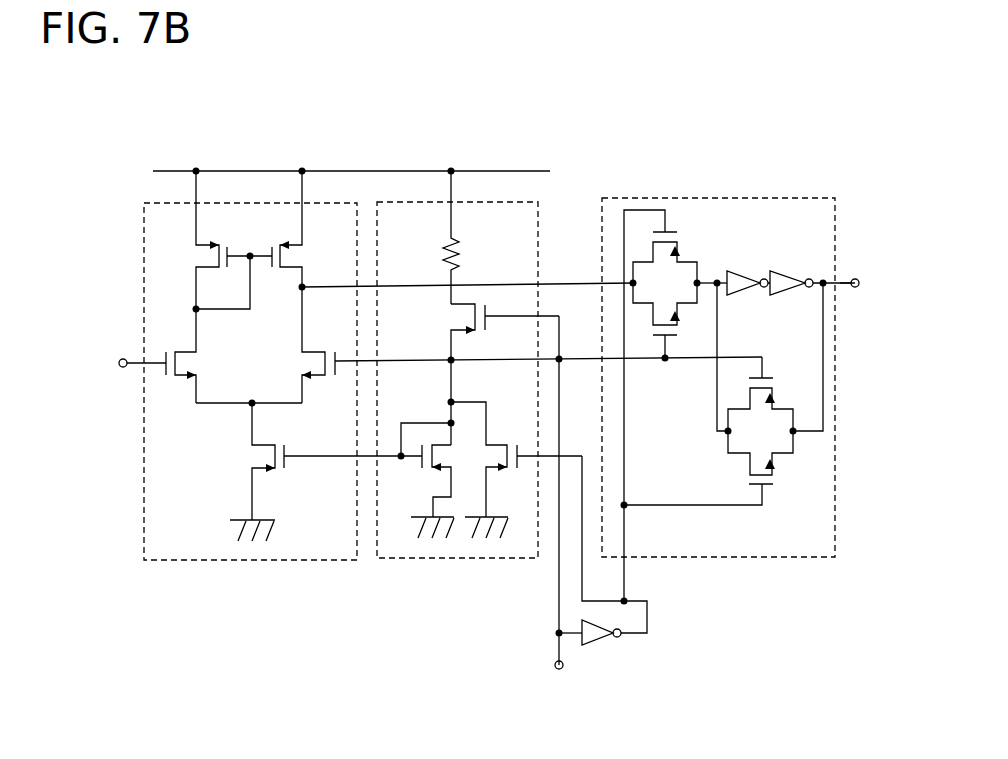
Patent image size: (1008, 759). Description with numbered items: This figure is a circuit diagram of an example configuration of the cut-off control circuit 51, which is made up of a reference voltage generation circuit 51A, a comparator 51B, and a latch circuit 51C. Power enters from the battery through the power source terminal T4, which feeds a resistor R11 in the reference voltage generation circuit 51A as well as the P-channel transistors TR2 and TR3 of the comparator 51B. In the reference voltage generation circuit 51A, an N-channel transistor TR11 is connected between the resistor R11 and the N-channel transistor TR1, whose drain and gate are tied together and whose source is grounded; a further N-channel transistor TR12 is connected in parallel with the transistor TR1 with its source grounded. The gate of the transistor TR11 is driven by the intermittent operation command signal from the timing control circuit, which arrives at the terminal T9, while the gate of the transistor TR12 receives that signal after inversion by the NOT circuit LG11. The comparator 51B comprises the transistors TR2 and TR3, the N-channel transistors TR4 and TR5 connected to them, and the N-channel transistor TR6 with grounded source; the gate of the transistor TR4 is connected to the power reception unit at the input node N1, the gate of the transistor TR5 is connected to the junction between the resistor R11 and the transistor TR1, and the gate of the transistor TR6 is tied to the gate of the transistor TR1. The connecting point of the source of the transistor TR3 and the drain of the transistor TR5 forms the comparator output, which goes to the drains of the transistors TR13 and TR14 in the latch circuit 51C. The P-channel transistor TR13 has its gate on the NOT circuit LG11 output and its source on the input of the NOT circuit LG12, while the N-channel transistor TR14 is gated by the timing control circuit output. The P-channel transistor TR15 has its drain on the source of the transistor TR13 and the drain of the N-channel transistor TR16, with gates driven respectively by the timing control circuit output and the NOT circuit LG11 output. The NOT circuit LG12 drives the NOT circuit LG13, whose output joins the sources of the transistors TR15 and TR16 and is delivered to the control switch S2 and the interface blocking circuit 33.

The cut-off control circuit 51 is at (190, 132).
The reference voltage generation circuit 51A is at (436, 198).
The comparator 51B is at (264, 200).
The latch circuit 51C is at (735, 198).
The transistor TR1 is at (425, 491).
The transistor TR2 is at (211, 240).
The transistor TR3 is at (311, 229).
The transistor TR4 is at (173, 356).
The transistor TR5 is at (326, 345).
The transistor TR6 is at (239, 472).
The transistor TR11 is at (477, 331).
The transistor TR12 is at (497, 440).
The transistor TR13 is at (680, 405).
The transistor TR14 is at (670, 358).
The transistor TR15 is at (774, 413).
The transistor TR16 is at (722, 484).
The resistor R11 is at (428, 237).
The NOT circuit LG11 is at (607, 646).
The NOT circuit LG12 is at (744, 298).
The NOT circuit LG13 is at (786, 272).
The power source terminal T4 is at (392, 170).
The input node N1 (RE) N1 is at (114, 364).
The control switch S2 is at (876, 272).
The interface blocking circuit 33 is at (867, 295).
The terminal T9 (TC) T9 is at (561, 680).